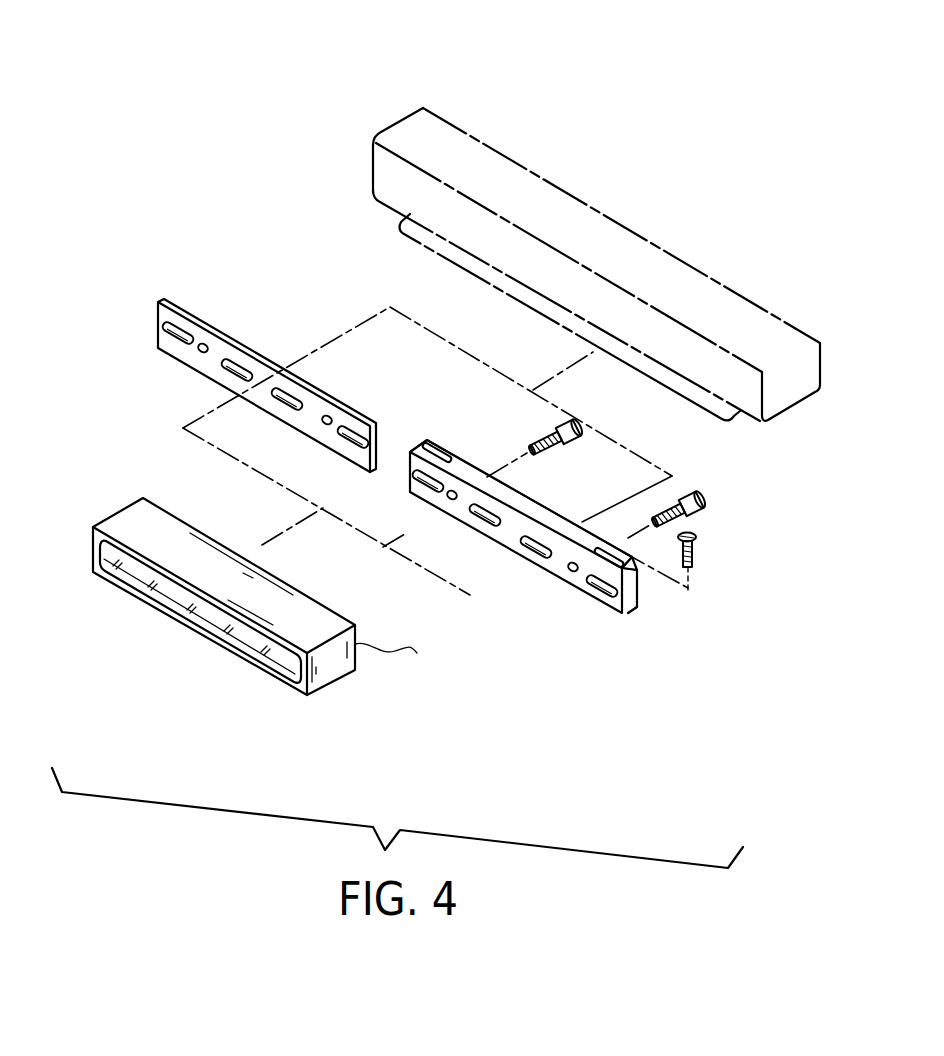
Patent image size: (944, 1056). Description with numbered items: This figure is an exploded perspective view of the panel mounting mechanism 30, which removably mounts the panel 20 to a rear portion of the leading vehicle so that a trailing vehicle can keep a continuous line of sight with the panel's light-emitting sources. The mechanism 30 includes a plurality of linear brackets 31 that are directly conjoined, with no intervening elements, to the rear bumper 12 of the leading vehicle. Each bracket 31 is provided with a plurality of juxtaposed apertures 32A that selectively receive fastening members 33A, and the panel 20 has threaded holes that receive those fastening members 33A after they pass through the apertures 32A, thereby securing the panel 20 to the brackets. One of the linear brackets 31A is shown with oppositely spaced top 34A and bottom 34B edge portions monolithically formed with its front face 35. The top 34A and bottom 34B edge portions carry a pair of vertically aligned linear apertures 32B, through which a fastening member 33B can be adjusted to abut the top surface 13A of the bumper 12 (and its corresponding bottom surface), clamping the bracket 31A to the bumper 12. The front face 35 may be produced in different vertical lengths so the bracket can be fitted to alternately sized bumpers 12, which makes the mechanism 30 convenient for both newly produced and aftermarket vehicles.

The panel mounting mechanism 30 is at (178, 138).
The rear bumper 12 is at (376, 193).
The top surface of the bumper 13A is at (775, 314).
The linear bracket 31 is at (184, 309).
The linear bracket 31A is at (638, 581).
The juxtaposed apertures 32A is at (202, 350).
The linear apertures 32B is at (430, 452).
The fastening members 33A is at (565, 420).
The fastening member 33B is at (693, 557).
The top edge portion 34A is at (505, 492).
The bottom edge portion 34B is at (637, 607).
The front face 35 is at (258, 392).
The panel 20 is at (98, 526).